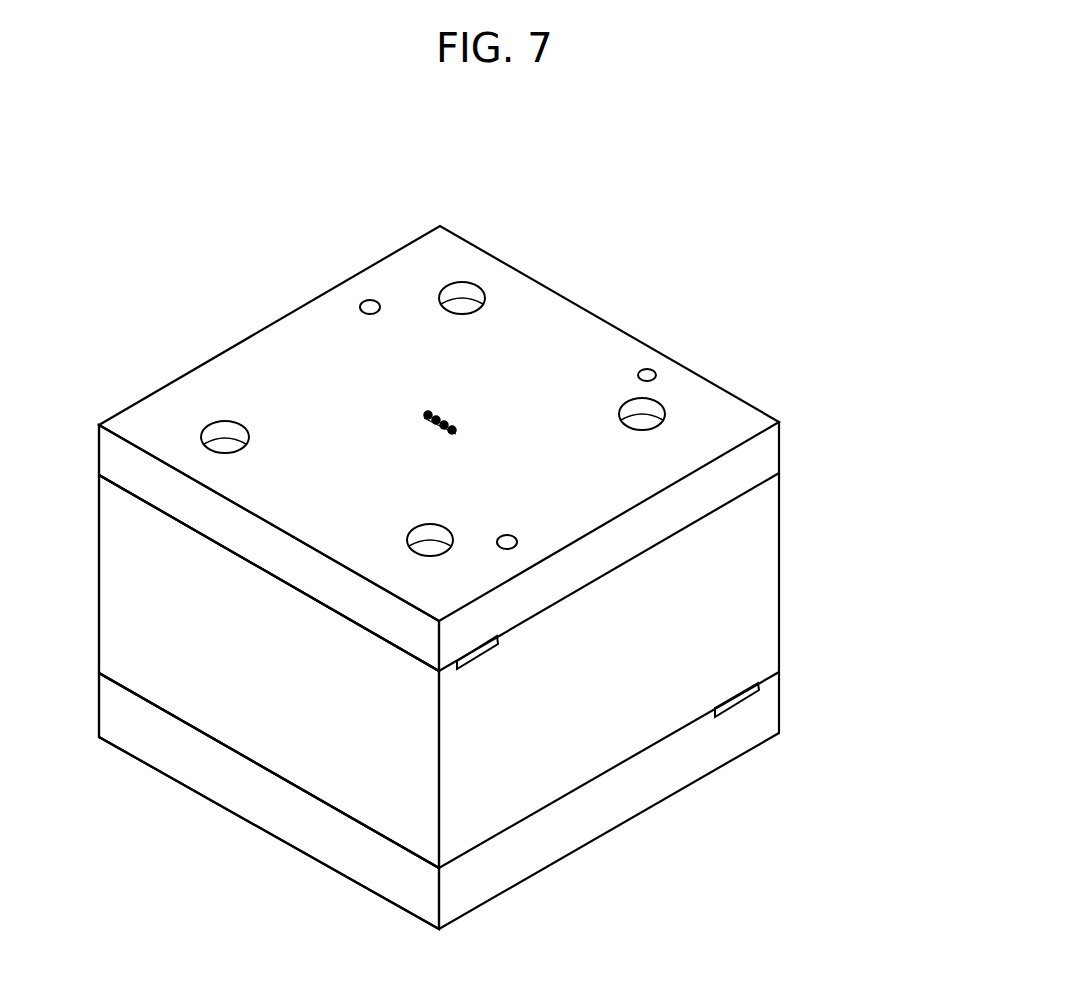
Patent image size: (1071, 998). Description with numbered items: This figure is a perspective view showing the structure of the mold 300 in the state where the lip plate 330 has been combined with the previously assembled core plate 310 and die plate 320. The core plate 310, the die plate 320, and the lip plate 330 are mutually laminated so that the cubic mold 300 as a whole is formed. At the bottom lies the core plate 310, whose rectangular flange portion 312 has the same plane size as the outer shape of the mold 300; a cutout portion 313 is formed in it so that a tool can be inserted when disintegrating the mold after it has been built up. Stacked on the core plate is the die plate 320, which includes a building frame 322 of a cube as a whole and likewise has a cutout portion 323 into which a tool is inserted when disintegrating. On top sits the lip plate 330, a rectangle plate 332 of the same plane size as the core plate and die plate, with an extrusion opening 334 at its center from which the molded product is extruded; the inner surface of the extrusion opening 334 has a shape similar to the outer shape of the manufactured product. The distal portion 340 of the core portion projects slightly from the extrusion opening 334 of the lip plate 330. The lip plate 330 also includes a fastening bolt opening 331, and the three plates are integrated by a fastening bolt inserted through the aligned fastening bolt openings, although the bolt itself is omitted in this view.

The mold 300 is at (103, 137).
The core plate 310 is at (818, 704).
The flange portion 312 is at (398, 877).
The cutout portion 313 is at (738, 702).
The die plate 320 is at (818, 570).
The building frame 322 is at (330, 777).
The cutout portion 323 is at (478, 658).
The lip plate 330 is at (818, 445).
The fastening bolt opening 331 is at (222, 432).
The rectangle plate 332 is at (333, 587).
The extrusion opening 334 is at (460, 431).
The distal portion 340 is at (437, 412).